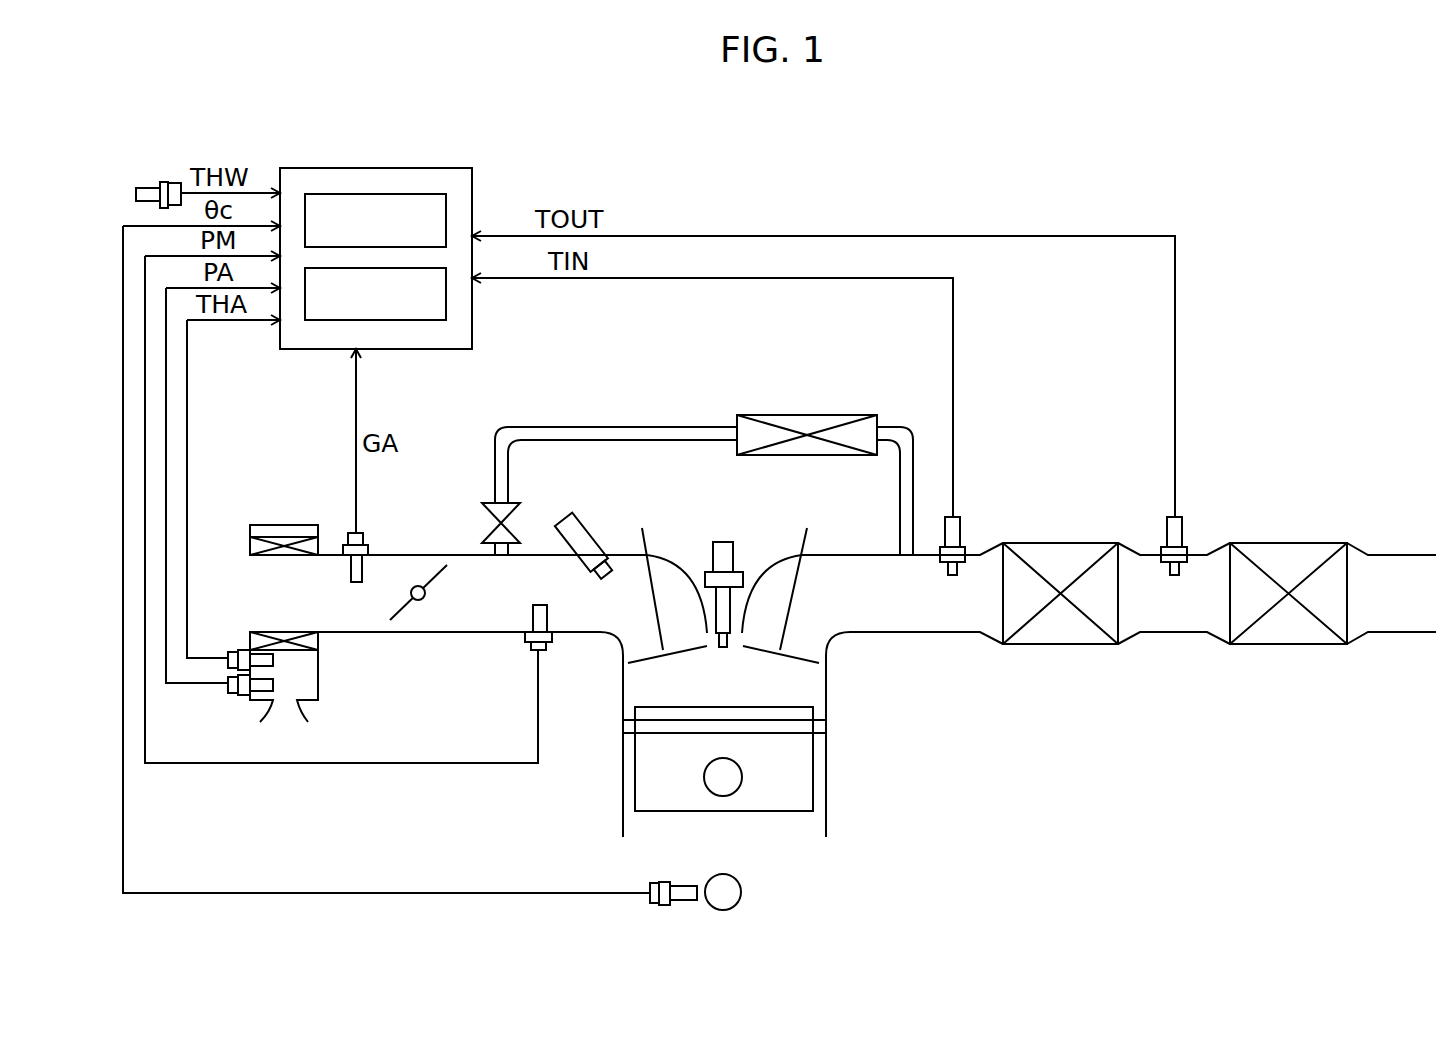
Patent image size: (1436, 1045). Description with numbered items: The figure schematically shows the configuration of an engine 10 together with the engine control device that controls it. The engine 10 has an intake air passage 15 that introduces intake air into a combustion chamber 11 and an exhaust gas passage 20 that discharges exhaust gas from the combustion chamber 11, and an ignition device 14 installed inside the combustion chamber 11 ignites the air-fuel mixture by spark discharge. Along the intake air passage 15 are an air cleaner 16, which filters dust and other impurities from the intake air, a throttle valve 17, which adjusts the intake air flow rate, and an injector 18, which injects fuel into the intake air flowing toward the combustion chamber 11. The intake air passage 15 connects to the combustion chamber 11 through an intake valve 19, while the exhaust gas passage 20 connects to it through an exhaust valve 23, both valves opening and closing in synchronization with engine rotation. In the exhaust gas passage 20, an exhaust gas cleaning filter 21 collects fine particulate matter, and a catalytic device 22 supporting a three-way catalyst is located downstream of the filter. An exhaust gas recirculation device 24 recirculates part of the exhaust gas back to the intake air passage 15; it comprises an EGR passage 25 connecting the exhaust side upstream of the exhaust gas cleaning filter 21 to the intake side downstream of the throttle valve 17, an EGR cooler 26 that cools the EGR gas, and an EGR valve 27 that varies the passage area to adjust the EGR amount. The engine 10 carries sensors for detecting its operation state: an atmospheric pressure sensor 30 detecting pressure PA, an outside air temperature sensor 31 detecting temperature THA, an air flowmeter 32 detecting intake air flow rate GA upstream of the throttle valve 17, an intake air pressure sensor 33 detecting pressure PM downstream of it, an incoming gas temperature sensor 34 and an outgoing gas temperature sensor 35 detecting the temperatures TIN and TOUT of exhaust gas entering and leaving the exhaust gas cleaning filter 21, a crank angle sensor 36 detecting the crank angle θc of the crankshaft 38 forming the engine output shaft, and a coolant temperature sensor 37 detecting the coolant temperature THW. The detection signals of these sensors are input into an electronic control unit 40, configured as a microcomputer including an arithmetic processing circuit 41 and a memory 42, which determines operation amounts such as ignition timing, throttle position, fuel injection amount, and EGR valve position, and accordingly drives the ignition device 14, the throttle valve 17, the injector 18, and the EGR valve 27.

The engine 10 is at (817, 601).
The combustion chamber 11 is at (738, 697).
The ignition device 14 is at (735, 552).
The intake air passage 15 is at (490, 607).
The air cleaner 16 is at (250, 548).
The throttle valve 17 is at (410, 604).
The injector 18 is at (592, 522).
The intake valve 19 is at (656, 620).
The exhaust gas passage 20 is at (898, 607).
The exhaust gas cleaning filter 21 is at (1062, 638).
The catalytic device 22 is at (1290, 638).
The exhaust valve 23 is at (794, 600).
The exhaust gas recirculation device 24 is at (680, 460).
The EGR passage 25 is at (655, 427).
The EGR cooler 26 is at (815, 457).
The EGR valve 27 is at (484, 504).
The atmospheric pressure sensor 30 is at (243, 695).
The outside air temperature sensor 31 is at (245, 650).
The air flowmeter 32 is at (348, 570).
The intake air pressure sensor 33 is at (548, 613).
The incoming gas temperature sensor 34 is at (962, 530).
The outgoing gas temperature sensor 35 is at (1184, 530).
The crank angle sensor 36 is at (683, 903).
The coolant temperature sensor 37 is at (151, 182).
The crankshaft 38 is at (742, 891).
The electronic control unit 40 is at (290, 168).
The arithmetic processing circuit 41 is at (446, 215).
The memory 42 is at (446, 300).